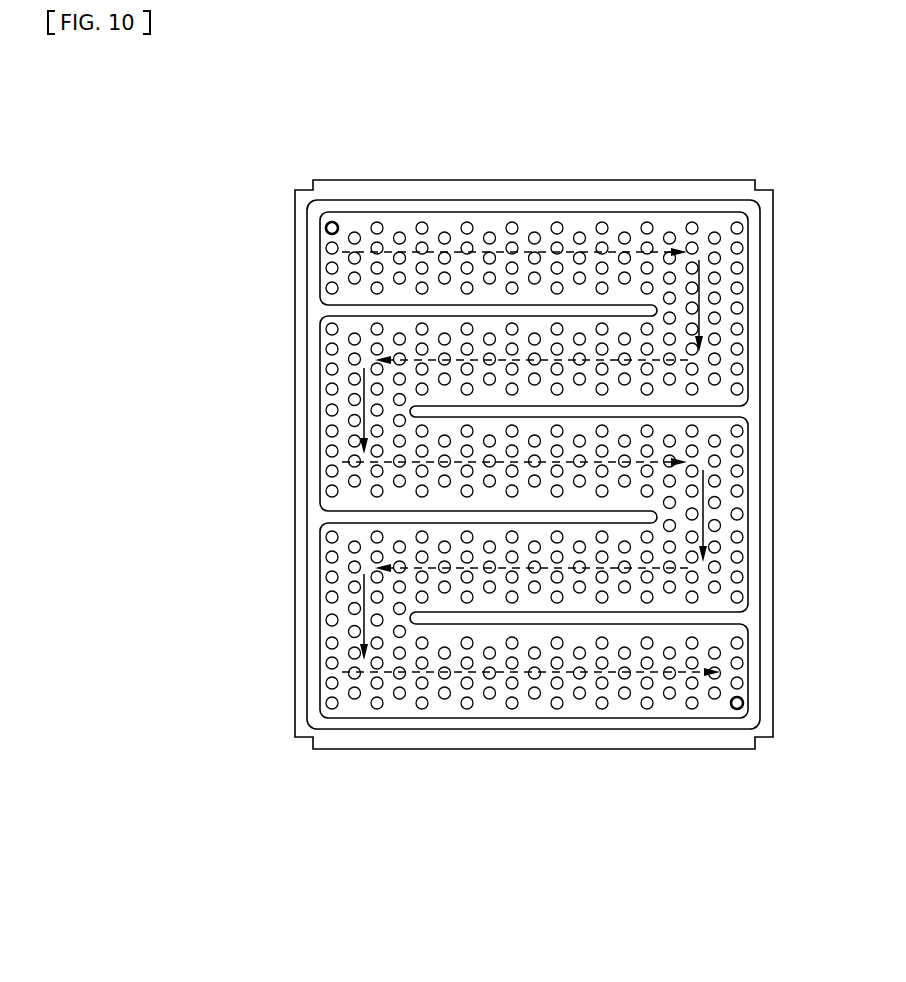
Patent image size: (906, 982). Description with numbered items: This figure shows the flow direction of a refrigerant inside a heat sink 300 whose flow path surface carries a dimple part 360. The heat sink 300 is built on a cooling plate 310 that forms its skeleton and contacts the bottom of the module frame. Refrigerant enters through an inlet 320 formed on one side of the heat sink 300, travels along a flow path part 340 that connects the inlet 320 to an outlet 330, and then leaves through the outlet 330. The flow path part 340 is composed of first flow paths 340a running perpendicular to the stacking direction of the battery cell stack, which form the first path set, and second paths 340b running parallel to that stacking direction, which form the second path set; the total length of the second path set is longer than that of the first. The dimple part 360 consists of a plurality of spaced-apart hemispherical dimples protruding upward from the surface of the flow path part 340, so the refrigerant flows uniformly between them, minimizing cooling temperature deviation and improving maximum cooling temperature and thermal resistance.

The heat sink 300 is at (535, 78).
The cooling plate 310 is at (318, 310).
The inlet 320 is at (333, 221).
The outlet 330 is at (737, 712).
The flow path part 340 is at (447, 710).
The first flow paths 340a is at (355, 883).
The second paths 340b is at (355, 932).
The dimple part 360 is at (513, 221).